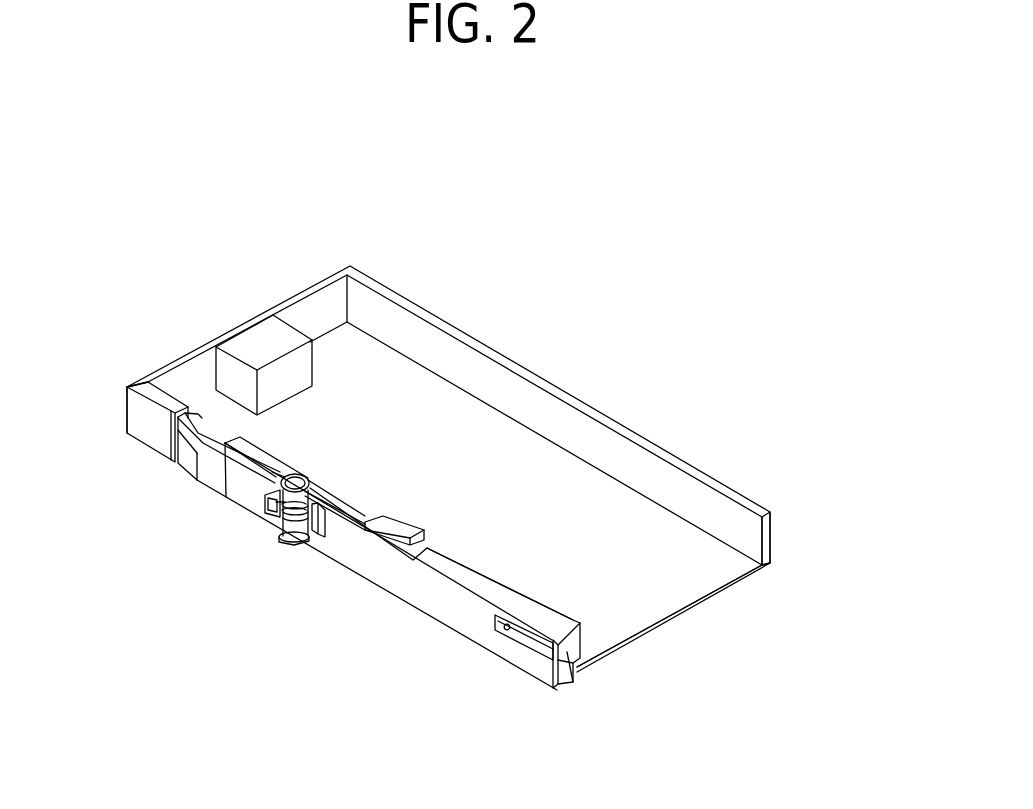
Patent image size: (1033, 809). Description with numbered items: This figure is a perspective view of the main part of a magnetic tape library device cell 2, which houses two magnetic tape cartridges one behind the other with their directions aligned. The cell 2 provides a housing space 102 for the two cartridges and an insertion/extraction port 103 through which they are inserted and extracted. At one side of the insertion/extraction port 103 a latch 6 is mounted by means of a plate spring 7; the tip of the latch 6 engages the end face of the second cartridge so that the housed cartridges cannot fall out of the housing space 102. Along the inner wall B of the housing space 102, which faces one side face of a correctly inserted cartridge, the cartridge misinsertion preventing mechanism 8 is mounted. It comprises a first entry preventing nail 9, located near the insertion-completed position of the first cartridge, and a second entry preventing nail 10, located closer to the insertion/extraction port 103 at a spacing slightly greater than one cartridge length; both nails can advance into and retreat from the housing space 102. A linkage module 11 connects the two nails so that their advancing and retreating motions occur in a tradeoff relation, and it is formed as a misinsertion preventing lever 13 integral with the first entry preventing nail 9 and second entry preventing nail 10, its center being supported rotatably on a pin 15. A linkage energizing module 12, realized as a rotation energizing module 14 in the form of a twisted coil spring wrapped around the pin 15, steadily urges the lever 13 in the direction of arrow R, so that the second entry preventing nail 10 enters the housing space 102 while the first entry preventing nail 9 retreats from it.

The magnetic tape library device cell 2 is at (430, 262).
The latch 6 is at (565, 655).
The plate spring 7 is at (518, 633).
The cartridge misinsertion preventing mechanism 8 is at (388, 730).
The first entry preventing nail 9 is at (165, 408).
The second entry preventing nail 10 is at (425, 528).
The linkage module 11 is at (227, 538).
The linkage energizing module 12 is at (310, 557).
The misinsertion preventing lever 13 is at (215, 493).
The rotation energizing module 14 is at (293, 543).
The pin 15 is at (278, 476).
The housing space 102 is at (590, 533).
The insertion/extraction port 103 is at (728, 573).
The inner wall B is at (470, 563).
The arrow R is at (243, 532).